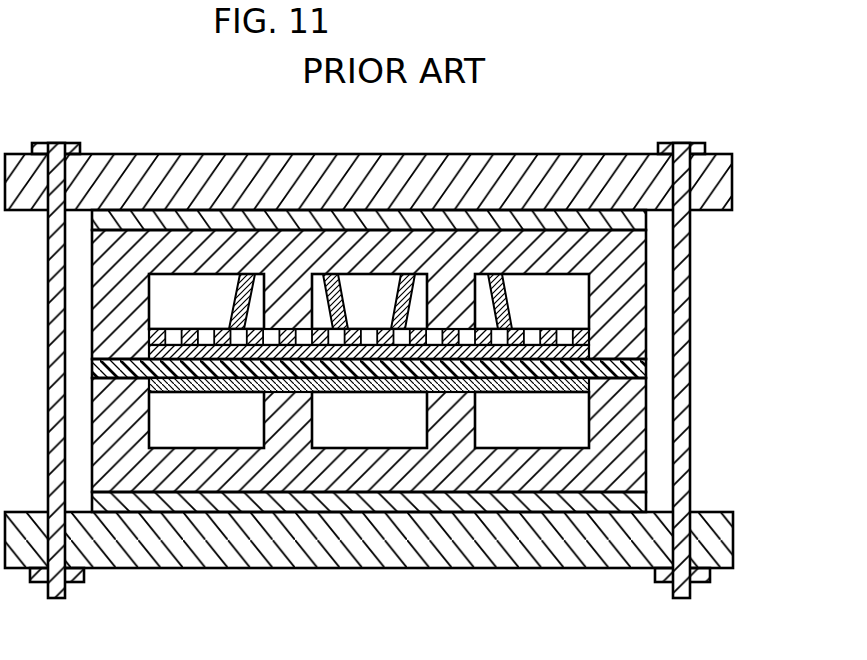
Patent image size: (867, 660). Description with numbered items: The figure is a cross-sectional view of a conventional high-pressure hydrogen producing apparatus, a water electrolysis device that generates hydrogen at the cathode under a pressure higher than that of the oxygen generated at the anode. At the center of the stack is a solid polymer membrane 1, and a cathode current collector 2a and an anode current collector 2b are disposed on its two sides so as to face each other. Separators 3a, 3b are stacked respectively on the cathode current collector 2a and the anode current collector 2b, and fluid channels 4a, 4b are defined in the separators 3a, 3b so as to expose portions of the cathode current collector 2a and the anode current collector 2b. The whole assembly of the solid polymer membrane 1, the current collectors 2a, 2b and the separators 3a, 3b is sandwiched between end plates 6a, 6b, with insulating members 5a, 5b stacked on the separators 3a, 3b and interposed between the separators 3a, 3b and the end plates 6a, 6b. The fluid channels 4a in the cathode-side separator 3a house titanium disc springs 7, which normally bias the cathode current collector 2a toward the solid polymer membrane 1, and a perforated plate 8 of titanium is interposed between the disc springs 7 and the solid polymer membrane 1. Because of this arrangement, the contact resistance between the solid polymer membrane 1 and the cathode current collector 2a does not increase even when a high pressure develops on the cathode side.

The solid polymer membrane 1 is at (636, 370).
The cathode current collector 2a is at (600, 354).
The anode current collector 2b is at (592, 384).
The separator 3a is at (632, 292).
The separator 3b is at (632, 421).
The fluid channel 4a is at (528, 276).
The fluid channel 4b is at (532, 443).
The insulating member 5a is at (645, 219).
The insulating member 5b is at (638, 502).
The end plate 6a is at (393, 162).
The end plate 6b is at (395, 541).
The disc spring 7 is at (339, 326).
The perforated plate 8 is at (189, 329).